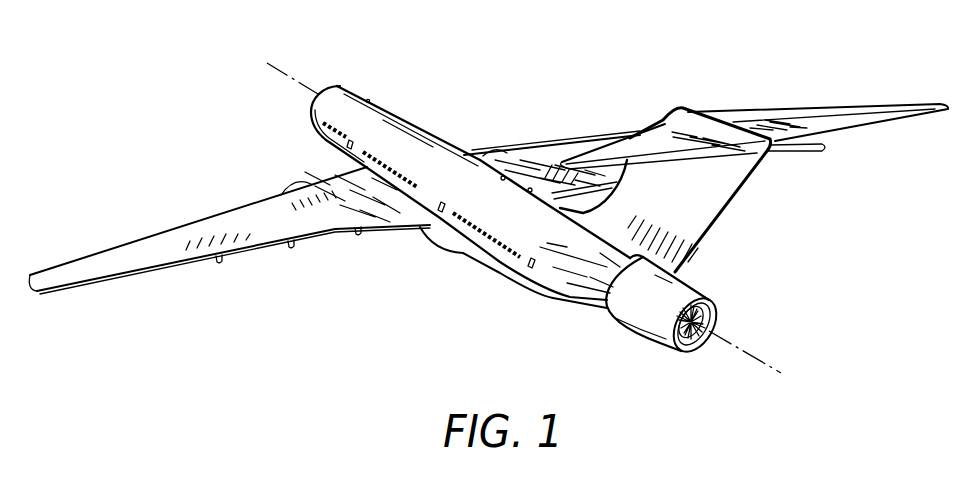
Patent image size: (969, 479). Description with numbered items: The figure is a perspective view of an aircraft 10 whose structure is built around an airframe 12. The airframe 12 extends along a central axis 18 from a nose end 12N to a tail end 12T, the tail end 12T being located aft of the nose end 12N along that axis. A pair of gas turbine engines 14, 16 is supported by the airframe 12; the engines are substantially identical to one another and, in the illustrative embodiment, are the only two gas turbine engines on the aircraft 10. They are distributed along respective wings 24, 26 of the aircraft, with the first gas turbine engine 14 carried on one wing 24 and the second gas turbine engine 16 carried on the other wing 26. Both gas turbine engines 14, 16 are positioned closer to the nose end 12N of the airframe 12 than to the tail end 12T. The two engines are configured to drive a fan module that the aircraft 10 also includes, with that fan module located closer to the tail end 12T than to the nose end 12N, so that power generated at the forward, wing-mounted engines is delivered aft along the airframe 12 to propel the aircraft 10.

The aircraft 10 is at (786, 72).
The airframe 12 is at (455, 188).
The nose end 12N is at (328, 87).
The tail end 12T is at (717, 310).
The gas turbine engine 14 is at (288, 182).
The gas turbine engine 16 is at (498, 143).
The central axis 18 is at (750, 352).
The wing 24 is at (265, 213).
The wing 26 is at (572, 160).